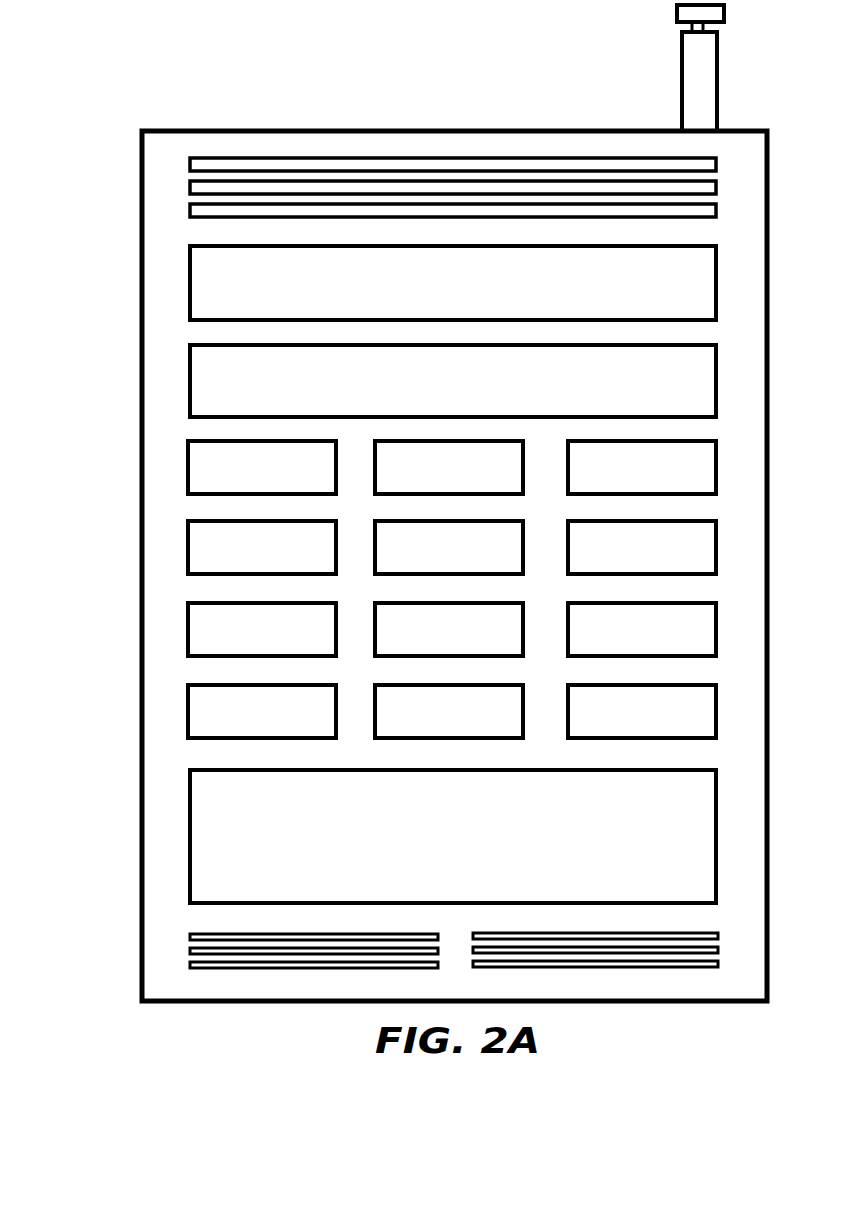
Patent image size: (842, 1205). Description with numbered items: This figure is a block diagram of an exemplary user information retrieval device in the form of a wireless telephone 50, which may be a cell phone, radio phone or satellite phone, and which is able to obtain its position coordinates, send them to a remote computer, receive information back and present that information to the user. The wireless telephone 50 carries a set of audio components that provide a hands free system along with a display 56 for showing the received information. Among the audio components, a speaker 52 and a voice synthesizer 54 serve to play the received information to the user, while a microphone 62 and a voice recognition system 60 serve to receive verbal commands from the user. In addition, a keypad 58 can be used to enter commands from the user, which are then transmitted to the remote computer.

The wireless telephone 50 is at (254, 50).
The speaker 52 is at (188, 188).
The voice synthesizer 54 is at (188, 283).
The display 56 is at (188, 380).
The keypad 58 is at (190, 548).
The voice recognition system 60 is at (190, 835).
The microphone 62 is at (190, 955).